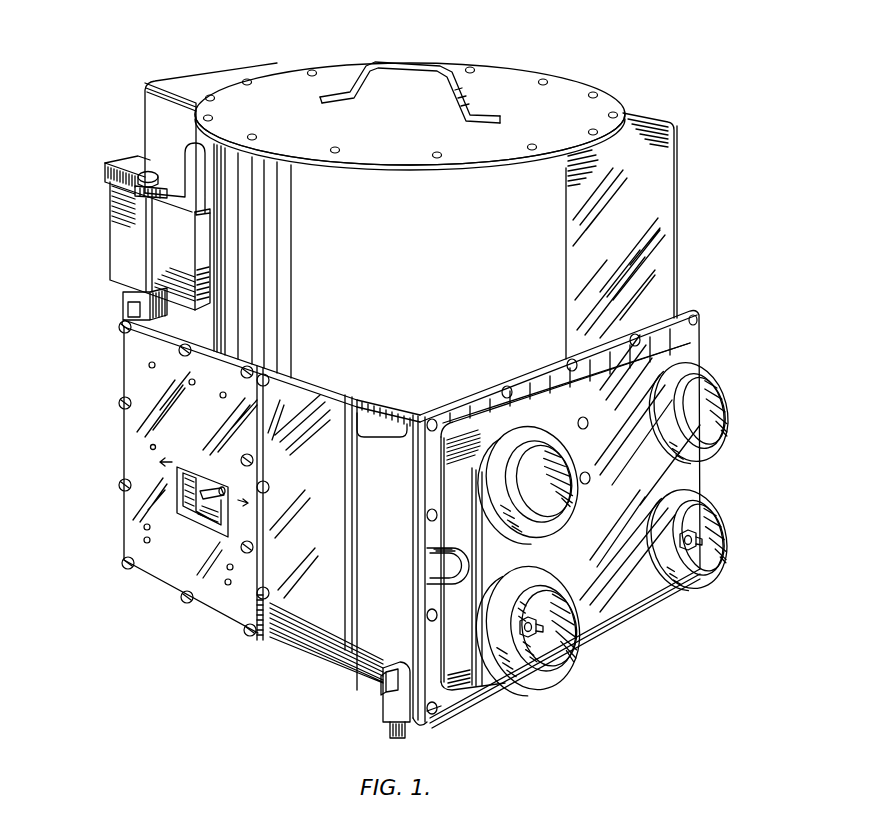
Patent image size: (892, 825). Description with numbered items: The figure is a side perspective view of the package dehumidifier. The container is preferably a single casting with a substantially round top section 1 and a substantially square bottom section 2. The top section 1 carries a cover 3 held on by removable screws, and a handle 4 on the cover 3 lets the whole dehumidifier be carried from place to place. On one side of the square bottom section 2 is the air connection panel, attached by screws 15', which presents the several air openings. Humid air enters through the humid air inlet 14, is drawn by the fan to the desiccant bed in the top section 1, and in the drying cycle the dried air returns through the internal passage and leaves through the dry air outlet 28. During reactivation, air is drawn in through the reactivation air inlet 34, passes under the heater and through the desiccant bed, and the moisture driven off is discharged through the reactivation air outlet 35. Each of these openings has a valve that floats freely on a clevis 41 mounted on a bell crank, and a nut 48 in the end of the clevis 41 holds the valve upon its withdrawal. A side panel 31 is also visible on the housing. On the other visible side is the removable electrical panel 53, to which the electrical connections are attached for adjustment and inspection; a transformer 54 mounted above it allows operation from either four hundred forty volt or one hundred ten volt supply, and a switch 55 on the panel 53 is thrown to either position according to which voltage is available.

The top section 1 is at (445, 245).
The bottom section 2 is at (406, 527).
The cover 3 is at (500, 87).
The handle 4 is at (413, 60).
The humid air inlet 14 is at (555, 526).
The screws 15' is at (526, 673).
The dry air outlet 28 is at (717, 388).
The side panel 31 is at (325, 462).
The reactivation air inlet 34 is at (540, 667).
The reactivation air outlet 35 is at (713, 566).
The clevis 41 is at (540, 630).
The nut 48 is at (702, 541).
The panel 53 is at (128, 452).
The transformer 54 is at (120, 248).
The switch 55 is at (215, 512).